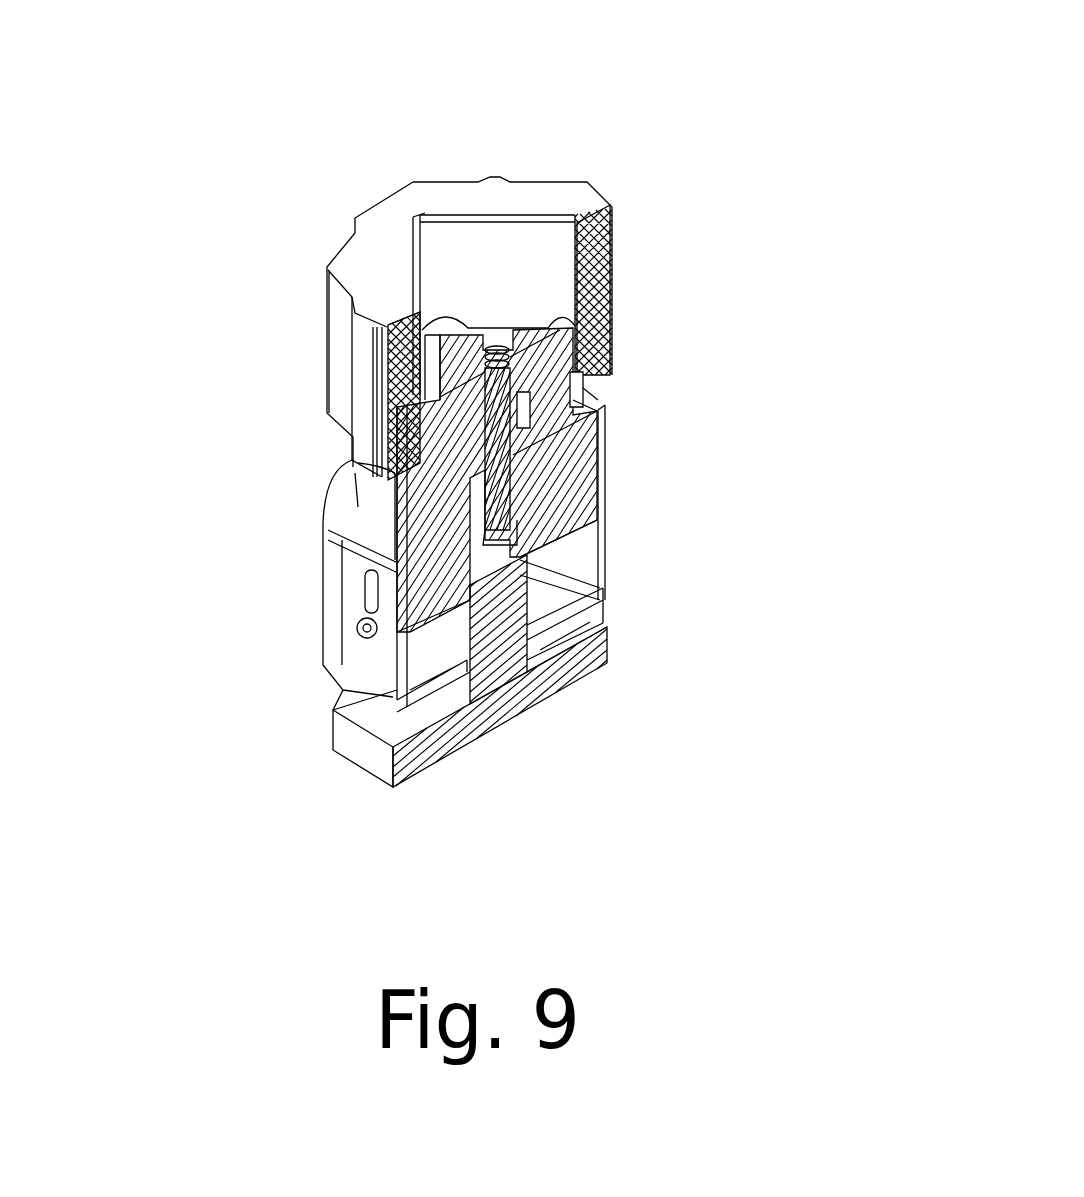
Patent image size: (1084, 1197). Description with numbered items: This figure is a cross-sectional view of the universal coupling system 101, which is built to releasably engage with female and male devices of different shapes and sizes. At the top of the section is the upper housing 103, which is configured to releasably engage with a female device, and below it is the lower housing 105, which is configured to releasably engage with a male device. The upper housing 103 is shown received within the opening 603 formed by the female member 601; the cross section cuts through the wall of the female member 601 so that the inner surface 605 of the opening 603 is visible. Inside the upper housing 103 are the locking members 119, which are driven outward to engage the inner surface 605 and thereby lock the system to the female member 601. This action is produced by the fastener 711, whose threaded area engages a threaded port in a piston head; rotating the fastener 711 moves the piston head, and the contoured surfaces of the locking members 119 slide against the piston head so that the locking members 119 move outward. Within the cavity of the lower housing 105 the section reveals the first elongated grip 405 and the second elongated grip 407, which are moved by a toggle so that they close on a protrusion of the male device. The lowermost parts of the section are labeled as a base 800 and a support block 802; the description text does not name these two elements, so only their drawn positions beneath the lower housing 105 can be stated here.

The universal coupling system 101 is at (190, 192).
The upper housing 103 is at (690, 427).
The lower housing 105 is at (675, 530).
The locking members 119 is at (600, 360).
The first elongated grip 405 is at (600, 593).
The second elongated grip 407 is at (467, 655).
The female member 601 is at (613, 237).
The opening 603 is at (527, 263).
The inner surface 605 is at (480, 266).
The fastener 711 is at (600, 410).
The base plate 800 is at (517, 693).
The support block 802 is at (600, 647).